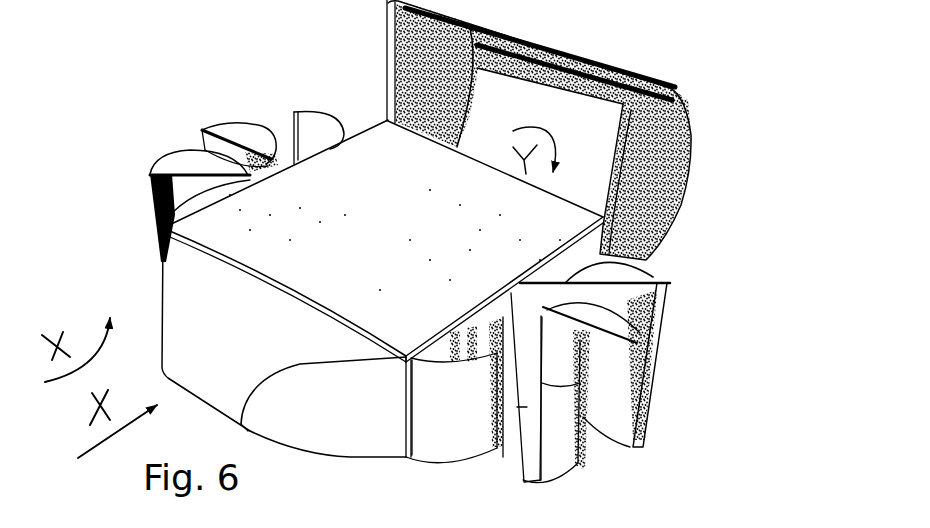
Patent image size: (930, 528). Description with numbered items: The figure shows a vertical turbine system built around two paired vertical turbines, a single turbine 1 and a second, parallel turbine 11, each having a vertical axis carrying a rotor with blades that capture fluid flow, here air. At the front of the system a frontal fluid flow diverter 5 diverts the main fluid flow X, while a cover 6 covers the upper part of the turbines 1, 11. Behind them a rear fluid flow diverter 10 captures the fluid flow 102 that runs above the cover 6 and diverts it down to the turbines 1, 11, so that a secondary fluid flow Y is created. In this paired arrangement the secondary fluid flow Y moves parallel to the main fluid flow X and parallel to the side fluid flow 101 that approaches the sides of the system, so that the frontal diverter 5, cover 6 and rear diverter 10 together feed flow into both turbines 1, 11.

The vertical wind turbine 1 is at (212, 122).
The frontal fluid flow diverter 5 is at (187, 327).
The cover 6 is at (372, 158).
The rear fluid flow diverter 10 is at (543, 58).
The second parallel turbine 11 is at (677, 357).
The side fluid flow 101 is at (152, 237).
The fluid flow running above the cover 102 is at (447, 206).